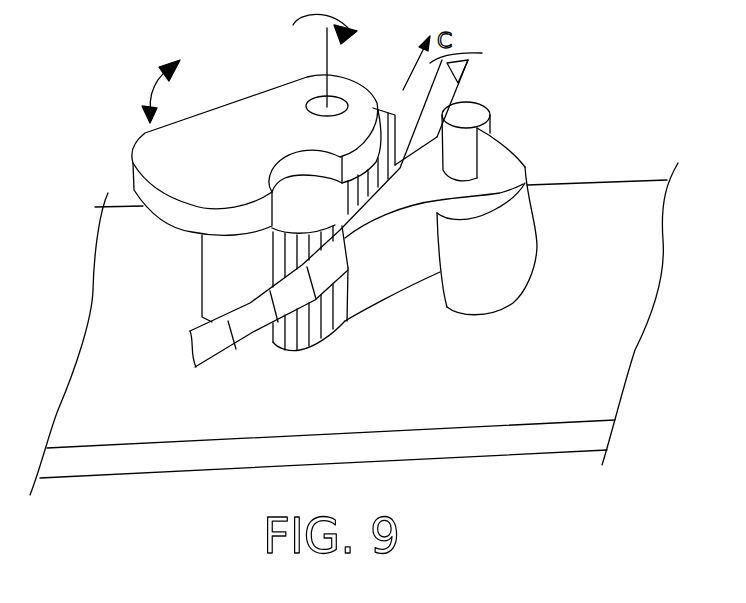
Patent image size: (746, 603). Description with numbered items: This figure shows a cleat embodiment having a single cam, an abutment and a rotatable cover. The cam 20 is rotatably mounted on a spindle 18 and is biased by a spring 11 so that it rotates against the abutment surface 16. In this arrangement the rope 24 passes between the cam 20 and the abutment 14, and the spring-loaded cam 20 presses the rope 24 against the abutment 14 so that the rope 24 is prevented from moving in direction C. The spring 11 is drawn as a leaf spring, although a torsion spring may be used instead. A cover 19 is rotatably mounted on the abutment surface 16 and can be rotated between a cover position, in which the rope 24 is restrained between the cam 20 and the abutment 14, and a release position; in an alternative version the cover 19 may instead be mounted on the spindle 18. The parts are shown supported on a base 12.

The spring 11 is at (510, 230).
The base plate 12 is at (560, 372).
The abutment 14 is at (215, 277).
The abutment surface 16 is at (307, 317).
The spindle 18 is at (475, 117).
The cover 19 is at (221, 124).
The cam 20 is at (402, 260).
The rope 24 is at (228, 342).